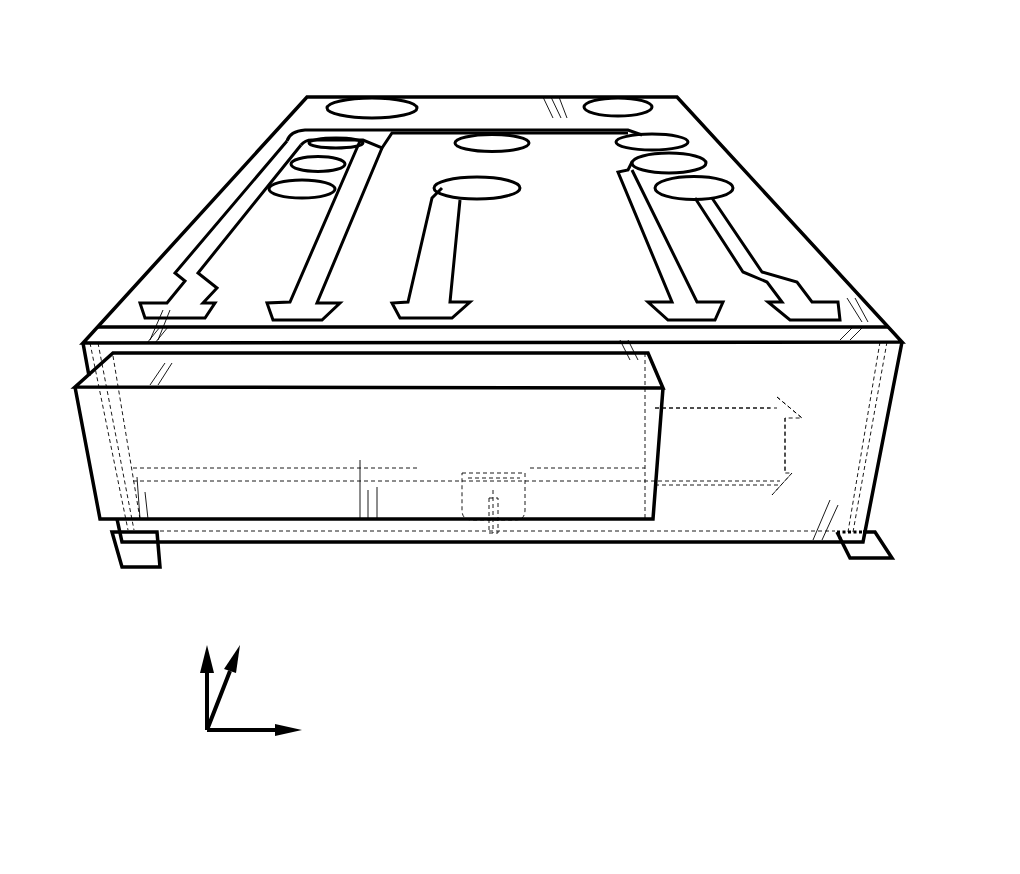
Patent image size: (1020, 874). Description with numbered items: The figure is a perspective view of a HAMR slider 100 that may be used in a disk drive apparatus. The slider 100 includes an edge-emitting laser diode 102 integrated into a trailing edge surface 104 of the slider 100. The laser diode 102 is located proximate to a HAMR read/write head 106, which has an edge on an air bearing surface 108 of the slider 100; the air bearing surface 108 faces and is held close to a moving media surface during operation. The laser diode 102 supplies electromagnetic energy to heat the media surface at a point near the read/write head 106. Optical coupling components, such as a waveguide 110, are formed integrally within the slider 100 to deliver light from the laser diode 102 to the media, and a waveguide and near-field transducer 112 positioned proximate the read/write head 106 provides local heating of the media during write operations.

The HAMR slider 100 is at (690, 38).
The edge-emitting laser diode 102 is at (95, 493).
The trailing edge surface 104 is at (144, 567).
The HAMR read/write head 106 is at (503, 525).
The air bearing surface 108 is at (880, 558).
The waveguide 110 is at (727, 488).
The near-field transducer 112 is at (487, 530).